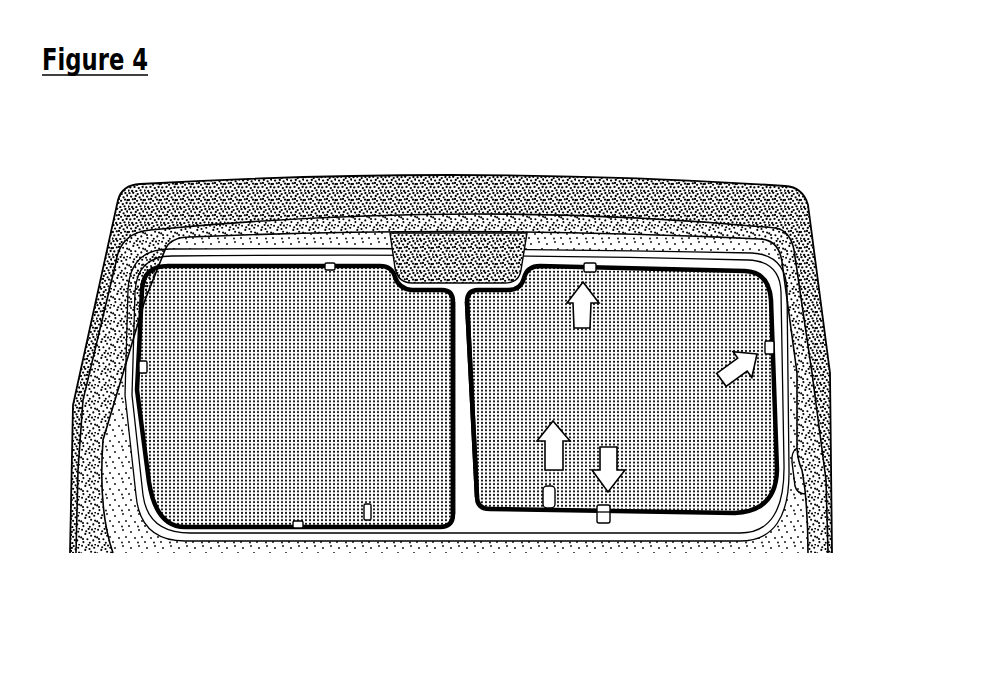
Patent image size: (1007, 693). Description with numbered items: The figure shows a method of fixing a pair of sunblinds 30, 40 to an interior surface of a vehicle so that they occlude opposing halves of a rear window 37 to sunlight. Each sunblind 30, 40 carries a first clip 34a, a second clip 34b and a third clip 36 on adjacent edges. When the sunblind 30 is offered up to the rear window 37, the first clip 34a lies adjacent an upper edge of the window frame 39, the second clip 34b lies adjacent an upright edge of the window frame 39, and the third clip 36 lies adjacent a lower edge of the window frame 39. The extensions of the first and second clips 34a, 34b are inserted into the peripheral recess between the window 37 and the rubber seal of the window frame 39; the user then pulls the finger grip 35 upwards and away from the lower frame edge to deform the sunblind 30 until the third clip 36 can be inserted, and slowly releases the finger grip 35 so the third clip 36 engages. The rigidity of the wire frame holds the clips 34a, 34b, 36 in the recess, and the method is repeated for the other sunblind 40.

The sunblind 30 is at (700, 480).
The first clip 34a is at (588, 263).
The second clip 34b is at (775, 347).
The finger grip 35 is at (545, 506).
The third clip 36 is at (600, 522).
The rear window 37 is at (474, 522).
The window frame 39 is at (806, 494).
The sunblind 40 is at (247, 466).